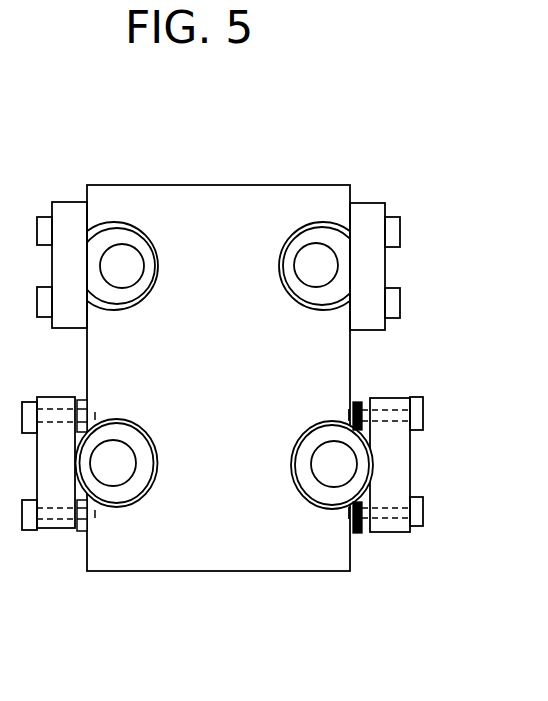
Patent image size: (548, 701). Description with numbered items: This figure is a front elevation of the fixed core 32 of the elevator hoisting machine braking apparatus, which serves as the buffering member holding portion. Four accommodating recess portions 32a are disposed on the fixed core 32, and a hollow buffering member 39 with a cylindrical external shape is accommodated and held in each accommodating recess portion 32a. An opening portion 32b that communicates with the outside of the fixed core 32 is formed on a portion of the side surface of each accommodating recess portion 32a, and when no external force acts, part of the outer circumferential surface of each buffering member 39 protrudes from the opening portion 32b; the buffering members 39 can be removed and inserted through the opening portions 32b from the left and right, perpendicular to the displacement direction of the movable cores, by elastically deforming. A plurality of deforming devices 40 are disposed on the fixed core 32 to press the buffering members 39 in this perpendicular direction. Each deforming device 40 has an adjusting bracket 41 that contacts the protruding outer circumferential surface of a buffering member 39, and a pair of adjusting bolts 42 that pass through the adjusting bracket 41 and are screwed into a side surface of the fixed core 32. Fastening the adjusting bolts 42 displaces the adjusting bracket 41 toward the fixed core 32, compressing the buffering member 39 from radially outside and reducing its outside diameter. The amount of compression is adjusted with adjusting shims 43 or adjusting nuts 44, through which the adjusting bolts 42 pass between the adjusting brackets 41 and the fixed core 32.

The fixed core 32 is at (225, 185).
The accommodating recess portion 32a is at (330, 224).
The opening portion 32b is at (352, 248).
The buffering member 39 is at (315, 233).
The deforming device 40 is at (437, 283).
The adjusting bracket 41 is at (365, 330).
The adjusting bolt 42 is at (401, 229).
The adjusting shim 43 is at (356, 533).
The adjusting nut 44 is at (80, 533).